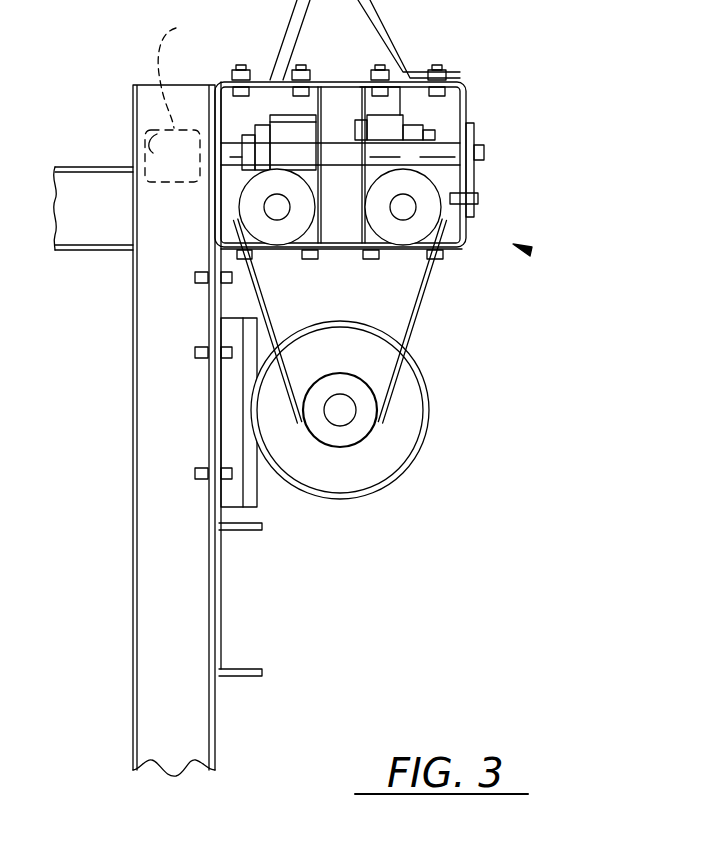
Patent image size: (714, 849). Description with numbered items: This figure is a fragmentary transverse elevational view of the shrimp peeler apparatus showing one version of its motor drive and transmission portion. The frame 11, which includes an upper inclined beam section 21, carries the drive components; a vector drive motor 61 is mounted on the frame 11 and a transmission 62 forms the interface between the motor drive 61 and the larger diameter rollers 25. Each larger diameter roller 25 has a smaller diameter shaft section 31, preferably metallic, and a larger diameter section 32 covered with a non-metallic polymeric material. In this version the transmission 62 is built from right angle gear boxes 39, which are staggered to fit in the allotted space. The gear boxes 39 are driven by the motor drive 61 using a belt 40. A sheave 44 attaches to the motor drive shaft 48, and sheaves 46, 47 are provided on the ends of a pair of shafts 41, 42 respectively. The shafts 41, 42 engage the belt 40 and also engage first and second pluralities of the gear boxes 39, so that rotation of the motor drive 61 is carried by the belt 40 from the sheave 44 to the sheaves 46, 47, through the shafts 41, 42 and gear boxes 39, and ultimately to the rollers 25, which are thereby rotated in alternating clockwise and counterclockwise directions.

The frame 11 is at (152, 619).
The upper inclined beam section 21 is at (83, 237).
The larger diameter roller 25 is at (148, 141).
The smaller diameter shaft section 31 is at (226, 142).
The larger diameter section 32 is at (309, 64).
The right angle gear box 39 is at (407, 118).
The belt 40 is at (413, 307).
The shaft 41 is at (403, 210).
The shaft 42 is at (274, 208).
The sheave 44 is at (345, 440).
The sheave 46 is at (432, 200).
The sheave 47 is at (277, 182).
The motor drive shaft 48 is at (339, 405).
The vector drive motor 61 is at (436, 407).
The transmission 62 is at (531, 251).